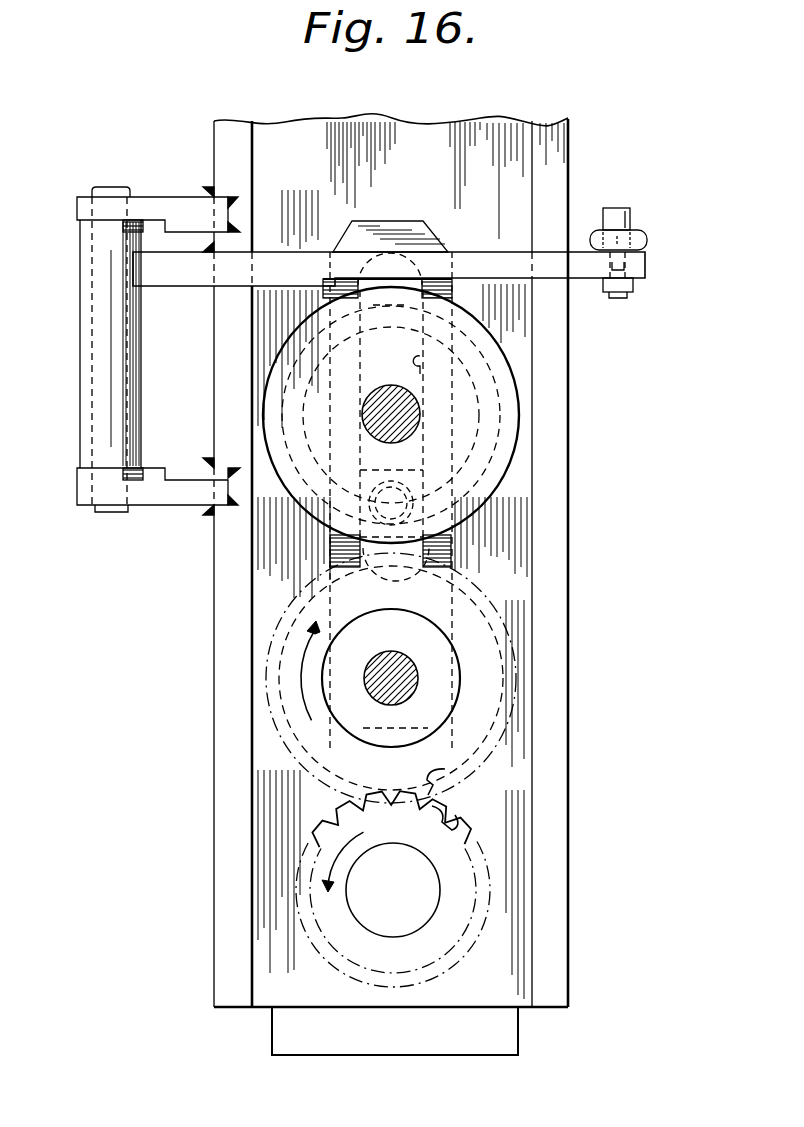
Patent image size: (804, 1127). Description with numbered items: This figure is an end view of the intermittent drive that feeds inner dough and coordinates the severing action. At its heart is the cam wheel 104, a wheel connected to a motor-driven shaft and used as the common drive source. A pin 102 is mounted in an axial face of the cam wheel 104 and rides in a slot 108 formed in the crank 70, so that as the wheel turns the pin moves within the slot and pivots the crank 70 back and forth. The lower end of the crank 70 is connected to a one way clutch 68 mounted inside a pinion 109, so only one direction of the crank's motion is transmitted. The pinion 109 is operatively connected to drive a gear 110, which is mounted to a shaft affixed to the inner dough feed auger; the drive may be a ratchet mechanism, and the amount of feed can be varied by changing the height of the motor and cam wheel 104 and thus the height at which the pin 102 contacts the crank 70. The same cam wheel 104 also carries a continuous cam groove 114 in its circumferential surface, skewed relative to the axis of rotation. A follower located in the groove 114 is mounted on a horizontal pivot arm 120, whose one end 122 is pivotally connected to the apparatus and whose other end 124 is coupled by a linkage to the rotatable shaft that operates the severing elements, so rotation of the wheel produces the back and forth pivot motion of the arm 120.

The one way clutch 68 is at (432, 653).
The crank 70 is at (390, 236).
The pin 102 is at (407, 507).
The cam wheel 104 is at (505, 477).
The slot 108 is at (423, 377).
The pinion 109 is at (433, 770).
The gear 110 is at (437, 820).
The cam groove 114 is at (500, 437).
The pivot arm 120 is at (263, 260).
The one end 122 is at (80, 284).
The other end 124 is at (647, 275).